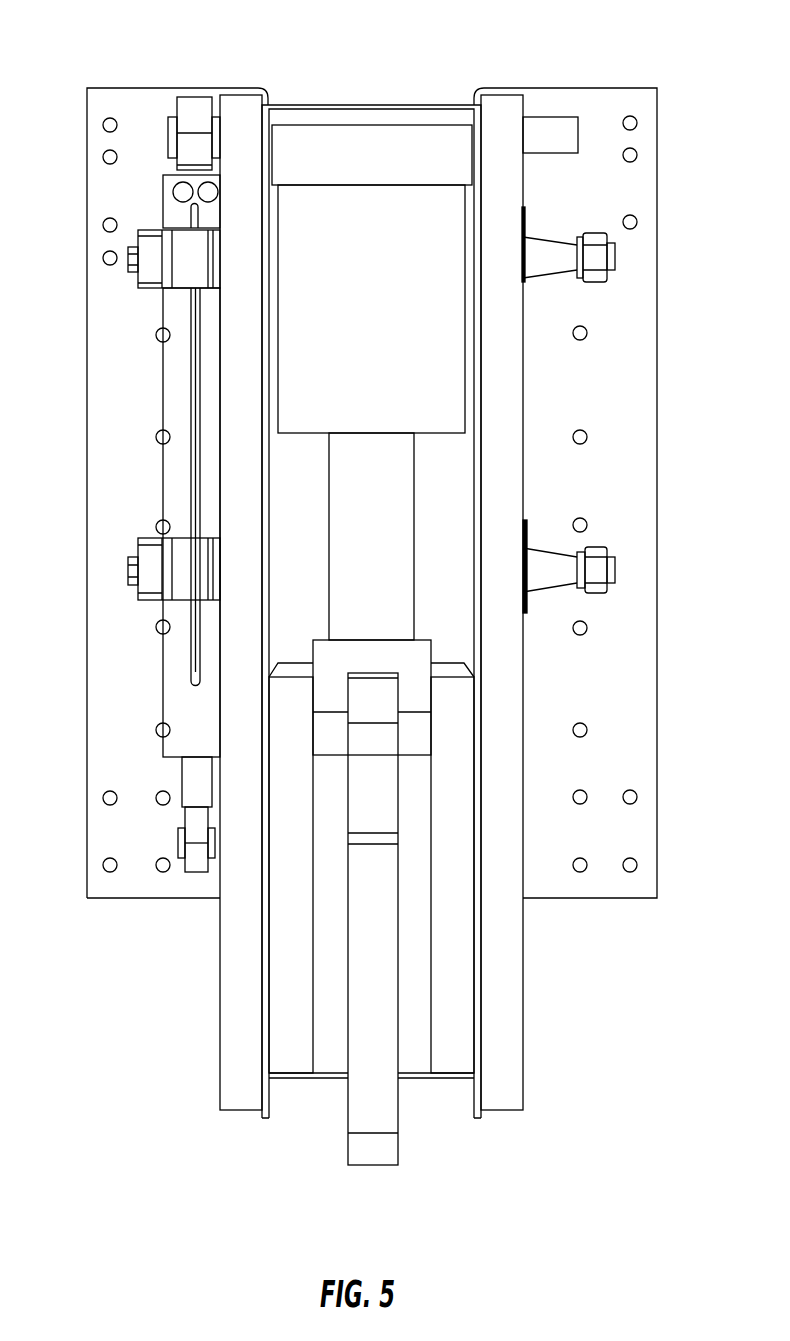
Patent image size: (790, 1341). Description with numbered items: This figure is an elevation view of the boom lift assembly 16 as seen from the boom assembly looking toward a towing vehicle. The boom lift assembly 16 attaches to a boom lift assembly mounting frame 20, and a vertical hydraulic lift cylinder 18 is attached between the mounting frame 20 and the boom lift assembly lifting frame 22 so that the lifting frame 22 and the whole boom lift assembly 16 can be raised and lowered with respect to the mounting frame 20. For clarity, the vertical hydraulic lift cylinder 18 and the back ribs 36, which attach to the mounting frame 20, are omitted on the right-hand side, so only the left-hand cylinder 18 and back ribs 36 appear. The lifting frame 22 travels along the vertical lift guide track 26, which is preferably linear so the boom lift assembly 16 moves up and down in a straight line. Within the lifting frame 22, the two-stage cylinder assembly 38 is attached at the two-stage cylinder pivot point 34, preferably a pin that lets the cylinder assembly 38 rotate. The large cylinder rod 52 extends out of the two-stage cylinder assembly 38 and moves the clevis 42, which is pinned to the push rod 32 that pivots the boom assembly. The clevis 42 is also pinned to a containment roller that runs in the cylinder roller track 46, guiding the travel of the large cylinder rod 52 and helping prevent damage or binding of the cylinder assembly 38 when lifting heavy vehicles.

The boom lift assembly 16 is at (398, 582).
The vertical hydraulic lift cylinder 18 is at (170, 707).
The boom lift assembly mounting frame 20 is at (130, 97).
The boom lift assembly lifting frame 22 is at (370, 117).
The vertical lift guide track 26 is at (233, 1087).
The push rod 32 is at (390, 918).
The two-stage cylinder pivot point 34 is at (423, 140).
The back ribs 36 is at (183, 243).
The two-stage cylinder assembly 38 is at (450, 337).
The clevis 42 is at (420, 653).
The cylinder roller track 46 is at (280, 723).
The large cylinder rod 52 is at (407, 552).